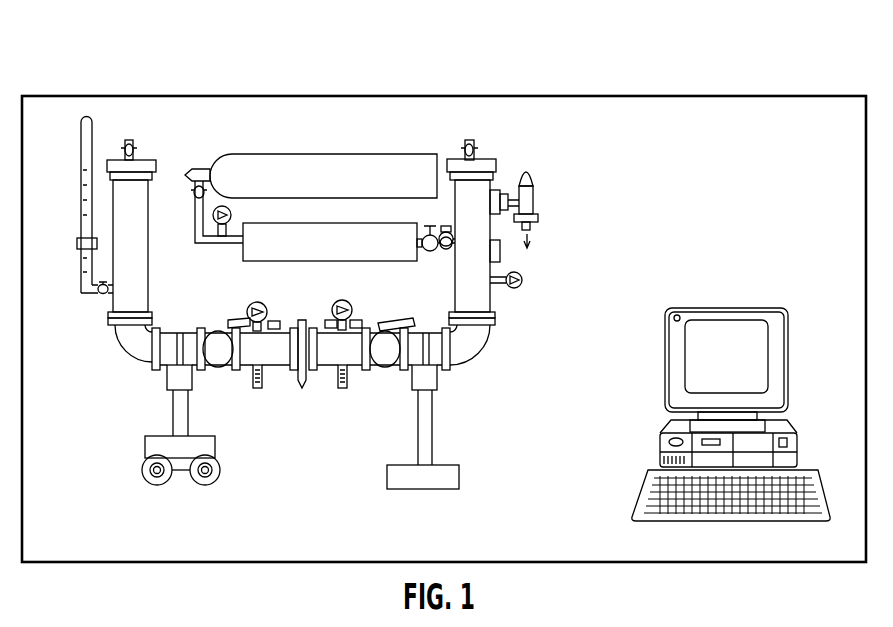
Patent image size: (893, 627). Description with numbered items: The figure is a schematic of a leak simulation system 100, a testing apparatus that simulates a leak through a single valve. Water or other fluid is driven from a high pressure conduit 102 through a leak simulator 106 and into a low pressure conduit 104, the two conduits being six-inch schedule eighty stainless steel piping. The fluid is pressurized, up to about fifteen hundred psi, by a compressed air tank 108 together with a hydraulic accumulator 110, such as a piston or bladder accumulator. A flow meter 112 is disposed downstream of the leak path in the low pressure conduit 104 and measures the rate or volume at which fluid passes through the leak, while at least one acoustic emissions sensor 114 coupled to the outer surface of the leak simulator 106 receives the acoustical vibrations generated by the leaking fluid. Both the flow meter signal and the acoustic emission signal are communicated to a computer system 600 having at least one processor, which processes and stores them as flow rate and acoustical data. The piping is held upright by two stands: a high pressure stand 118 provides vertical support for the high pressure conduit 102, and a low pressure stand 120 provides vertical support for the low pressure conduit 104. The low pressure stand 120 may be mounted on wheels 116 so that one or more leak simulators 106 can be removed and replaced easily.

The leak simulation system 100 is at (437, 95).
The high pressure conduit 102 is at (468, 360).
The low pressure conduit 104 is at (122, 344).
The leak simulator 106 is at (311, 387).
The compressed air tank 108 is at (281, 153).
The hydraulic accumulator 110 is at (344, 261).
The flow meter 112 is at (280, 379).
The acoustic emissions sensor 114 is at (318, 377).
The wheels 116 is at (206, 485).
The high pressure stand 118 is at (432, 441).
The low pressure stand 120 is at (173, 418).
The computer system 600 is at (700, 308).